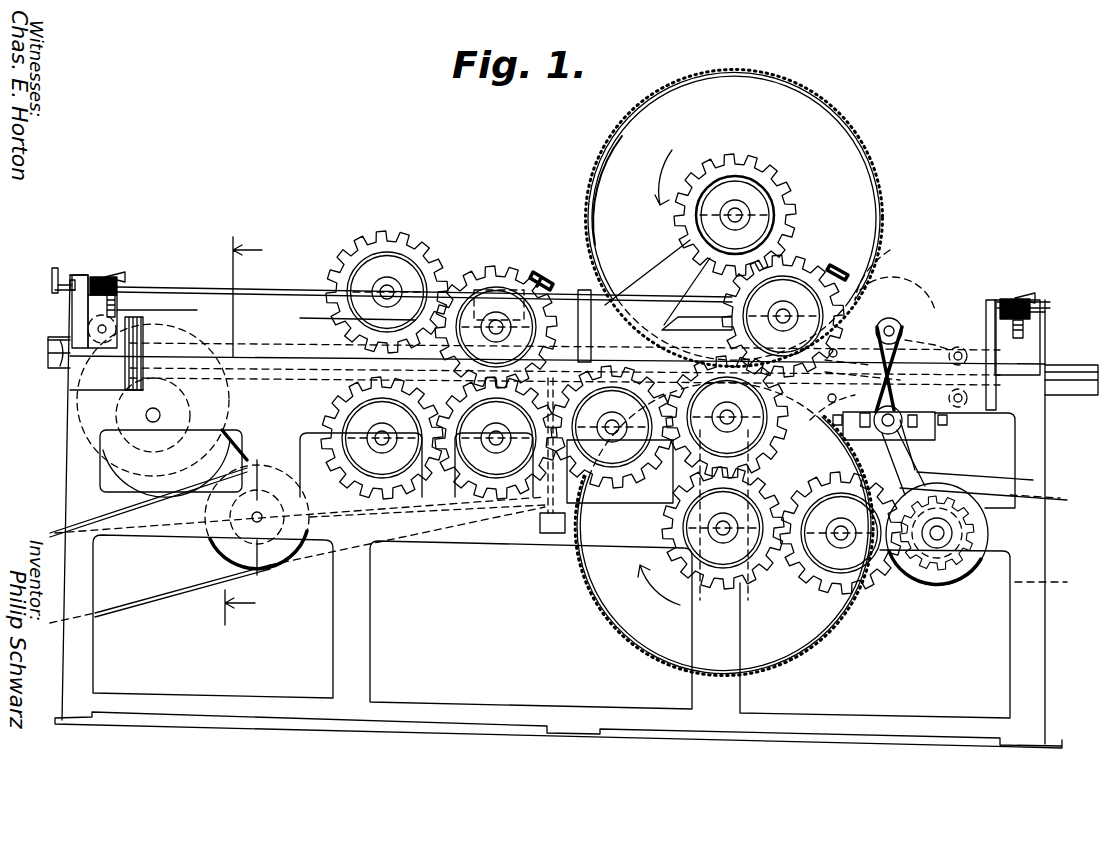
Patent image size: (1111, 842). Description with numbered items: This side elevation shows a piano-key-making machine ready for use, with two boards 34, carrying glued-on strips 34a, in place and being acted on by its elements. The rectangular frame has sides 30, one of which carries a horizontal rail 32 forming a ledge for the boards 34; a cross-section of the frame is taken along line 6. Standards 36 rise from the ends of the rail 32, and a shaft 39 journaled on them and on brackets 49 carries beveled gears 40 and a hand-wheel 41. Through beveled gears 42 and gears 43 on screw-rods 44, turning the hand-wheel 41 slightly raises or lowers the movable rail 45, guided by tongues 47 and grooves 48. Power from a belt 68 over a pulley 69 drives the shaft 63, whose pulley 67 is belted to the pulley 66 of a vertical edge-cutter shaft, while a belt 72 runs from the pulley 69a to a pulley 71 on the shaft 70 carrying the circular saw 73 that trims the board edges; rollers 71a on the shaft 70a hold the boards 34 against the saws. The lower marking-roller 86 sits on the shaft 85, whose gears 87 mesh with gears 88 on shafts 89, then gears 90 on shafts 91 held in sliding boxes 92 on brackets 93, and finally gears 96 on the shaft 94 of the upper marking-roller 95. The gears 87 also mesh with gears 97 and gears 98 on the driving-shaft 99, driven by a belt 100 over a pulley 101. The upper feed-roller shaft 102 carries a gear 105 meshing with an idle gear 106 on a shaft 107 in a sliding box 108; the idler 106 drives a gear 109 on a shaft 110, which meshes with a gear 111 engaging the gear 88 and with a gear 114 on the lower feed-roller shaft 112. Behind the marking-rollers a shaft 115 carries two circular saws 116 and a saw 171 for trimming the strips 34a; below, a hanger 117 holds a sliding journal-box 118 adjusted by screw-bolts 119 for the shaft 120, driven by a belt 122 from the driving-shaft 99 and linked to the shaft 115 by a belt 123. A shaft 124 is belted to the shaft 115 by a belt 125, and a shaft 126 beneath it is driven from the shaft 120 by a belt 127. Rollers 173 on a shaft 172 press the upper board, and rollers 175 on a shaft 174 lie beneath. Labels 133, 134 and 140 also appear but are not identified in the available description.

The sides of the supporting frame 30 is at (558, 511).
The rail 32 is at (73, 378).
The boards 34 is at (48, 353).
The strips 34a is at (48, 340).
The standard 36 is at (80, 275).
The shaft 39 is at (305, 287).
The beveled gear 40 is at (100, 277).
The hand-wheel 41 is at (56, 268).
The beveled gear 42 is at (118, 274).
The beveled gear 43 is at (115, 298).
The screw-rod 44 is at (1070, 340).
The movable rail 45 is at (557, 353).
The tongue 47 is at (55, 290).
The groove 48 is at (1040, 350).
The bracket 49 is at (582, 290).
The section line 6 is at (241, 431).
The shaft 63 is at (262, 517).
The pulley 66 is at (545, 533).
The pulley 67 is at (235, 540).
The belt 68 is at (165, 592).
The pulley 69 is at (272, 560).
The pulley 69a is at (290, 521).
The shaft 70 is at (160, 413).
The shaft 70a is at (98, 325).
The pulley 71 is at (166, 468).
The roller 71a is at (150, 353).
The belt 72 is at (246, 445).
The circular saw 73 is at (100, 480).
The shaft 85 is at (723, 528).
The lower marking-roller 86 is at (612, 626).
The gear 87 is at (665, 522).
The gear 88 is at (768, 445).
The shaft 89 is at (727, 418).
The gear 90 is at (697, 319).
The shaft 91 is at (784, 313).
The sliding box 92 is at (790, 308).
The bracket 93 is at (657, 282).
The shaft 94 is at (738, 215).
The upper marking-roller 95 is at (760, 72).
The gear 96 is at (755, 172).
The gear 97 is at (818, 583).
The gear 98 is at (922, 568).
The driving-shaft 99 is at (948, 530).
The belt 100 is at (992, 530).
The pulley 101 is at (970, 572).
The shaft 102 is at (390, 292).
The gear 105 is at (400, 240).
The idle gear 106 is at (488, 280).
The shaft 107 is at (496, 330).
The sliding box 108 is at (686, 267).
The gear 109 is at (496, 438).
The shaft 110 is at (496, 438).
The gear 111 is at (650, 460).
The shaft 112 is at (382, 438).
The gear 114 is at (345, 405).
The shaft 115 is at (889, 318).
The circular saw 116 is at (925, 300).
The hanger 117 is at (902, 428).
The sliding journal-box 118 is at (896, 411).
The screw-bolt 119 is at (845, 440).
The shaft 120 is at (919, 447).
The belt 122 is at (975, 470).
The belt 123 is at (862, 369).
The shaft 124 is at (958, 352).
The belt 125 is at (930, 340).
The shaft 126 is at (975, 459).
The belt 127 is at (955, 396).
The rim 133 is at (835, 108).
The rim 134 is at (612, 140).
The teeth 140 is at (675, 95).
The circular saw 171 is at (885, 370).
The shaft 172 is at (848, 337).
The roller 173 is at (848, 352).
The shaft 174 is at (847, 387).
The roller 175 is at (827, 416).